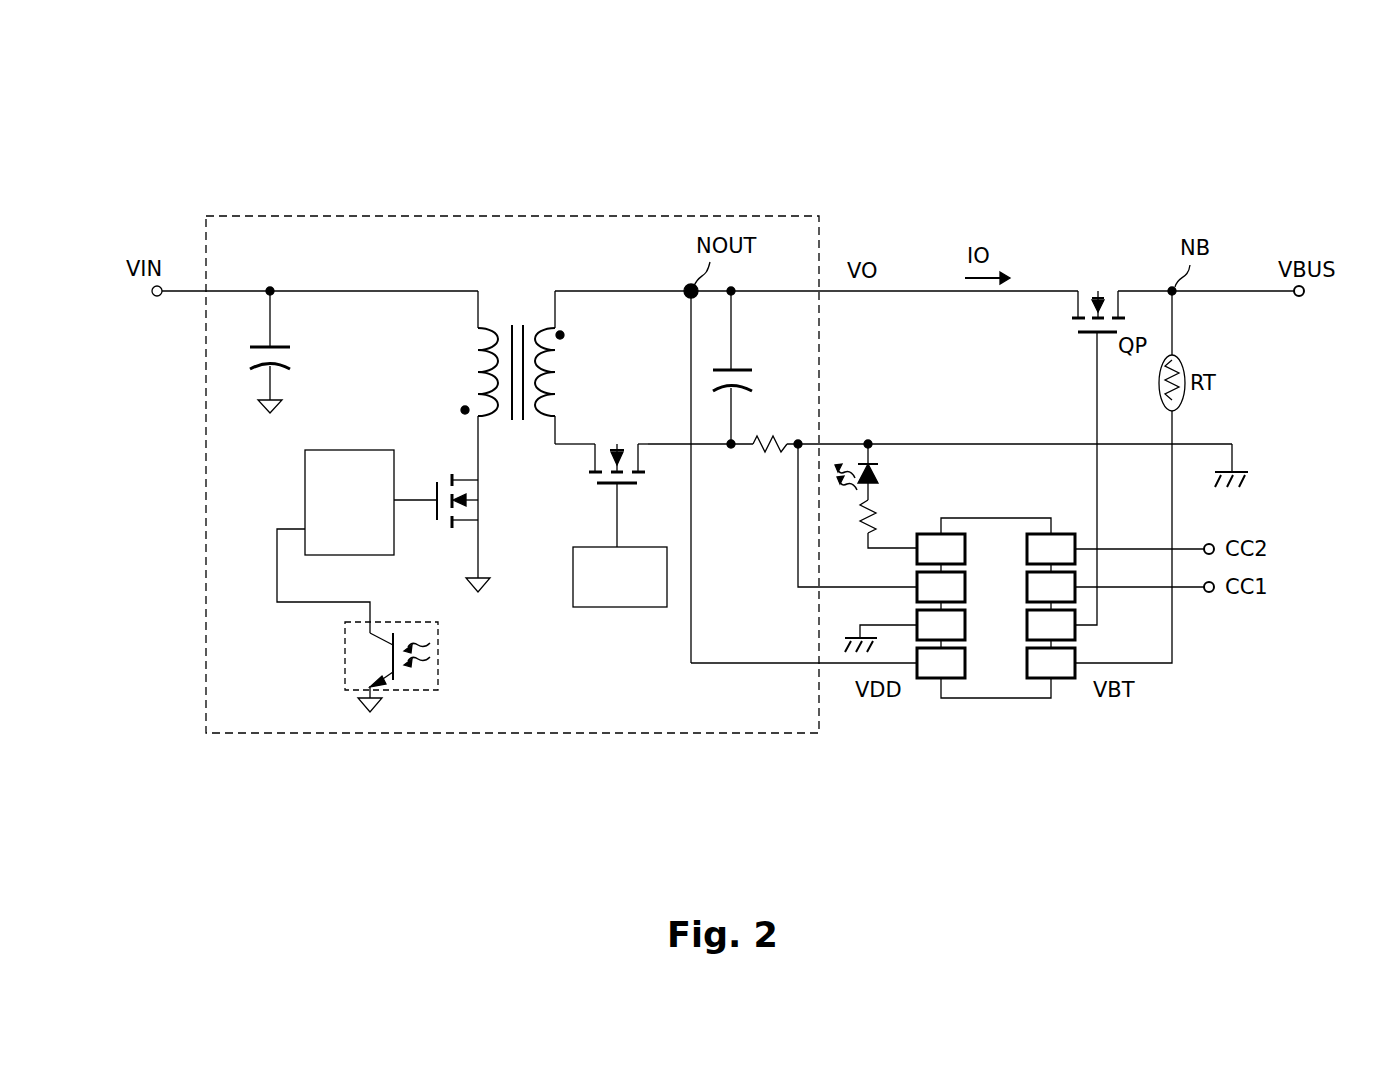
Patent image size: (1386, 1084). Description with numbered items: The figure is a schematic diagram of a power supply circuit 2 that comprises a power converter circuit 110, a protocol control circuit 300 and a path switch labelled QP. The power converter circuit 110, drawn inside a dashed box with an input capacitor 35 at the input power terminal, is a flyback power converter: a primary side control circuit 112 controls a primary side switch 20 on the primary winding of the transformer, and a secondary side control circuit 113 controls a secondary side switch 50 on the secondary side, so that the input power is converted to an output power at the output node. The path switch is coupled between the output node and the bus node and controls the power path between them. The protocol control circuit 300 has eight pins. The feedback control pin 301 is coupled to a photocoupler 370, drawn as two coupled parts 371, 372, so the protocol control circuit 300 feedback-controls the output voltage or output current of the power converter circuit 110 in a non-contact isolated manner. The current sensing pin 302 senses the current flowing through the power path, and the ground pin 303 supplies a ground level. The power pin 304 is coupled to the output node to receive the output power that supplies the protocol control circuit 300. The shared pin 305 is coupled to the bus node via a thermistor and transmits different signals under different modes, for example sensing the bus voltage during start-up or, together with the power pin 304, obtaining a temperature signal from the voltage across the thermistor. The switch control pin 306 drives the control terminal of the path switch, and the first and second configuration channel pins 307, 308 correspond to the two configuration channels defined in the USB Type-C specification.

The power supply circuit 2 is at (236, 80).
The input capacitor 35 is at (255, 352).
The primary side switch 20 is at (442, 519).
The primary side control circuit 112 is at (368, 513).
The secondary side switch 50 is at (627, 495).
The secondary side control circuit 113 is at (639, 592).
The power converter circuit 110 is at (650, 719).
The first optocoupler 371 is at (438, 646).
The second optocoupler 372 is at (878, 478).
The photocoupler 370 is at (538, 768).
The protocol control circuit 300 is at (1015, 609).
The feedback control pin 301 is at (956, 560).
The current sensing pin 302 is at (956, 598).
The ground pin 303 is at (956, 636).
The power pin 304 is at (956, 674).
The shared pin 305 is at (1066, 674).
The switch control pin 306 is at (1066, 636).
The first configuration channel pin 307 is at (1066, 598).
The second configuration channel pin 308 is at (1066, 560).